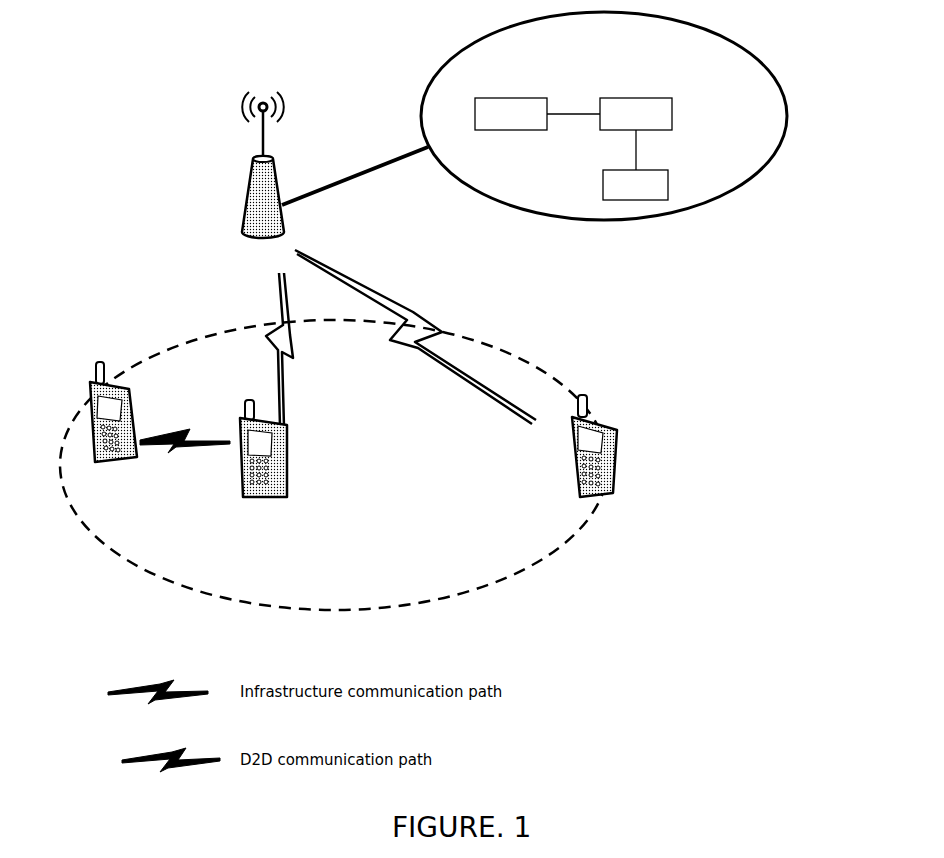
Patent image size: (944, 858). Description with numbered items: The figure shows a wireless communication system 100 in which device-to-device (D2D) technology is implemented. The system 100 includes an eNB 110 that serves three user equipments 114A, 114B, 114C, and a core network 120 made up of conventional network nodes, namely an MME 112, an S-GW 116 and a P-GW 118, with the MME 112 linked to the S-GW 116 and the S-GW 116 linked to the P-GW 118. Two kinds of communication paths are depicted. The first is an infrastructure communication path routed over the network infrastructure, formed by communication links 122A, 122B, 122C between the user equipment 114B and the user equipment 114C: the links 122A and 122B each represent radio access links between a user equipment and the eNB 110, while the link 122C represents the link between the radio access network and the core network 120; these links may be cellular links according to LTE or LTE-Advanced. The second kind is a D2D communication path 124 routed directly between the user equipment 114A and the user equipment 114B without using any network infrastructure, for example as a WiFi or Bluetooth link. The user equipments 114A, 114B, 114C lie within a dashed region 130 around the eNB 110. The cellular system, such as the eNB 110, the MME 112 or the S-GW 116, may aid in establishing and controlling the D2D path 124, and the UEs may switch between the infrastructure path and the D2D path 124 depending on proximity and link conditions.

The wireless communication system 100 is at (118, 89).
The eNB 110 is at (281, 162).
The MME 112 is at (515, 97).
The user equipment 114A is at (134, 402).
The user equipment 114B is at (288, 469).
The user equipment 114C is at (617, 487).
The S-GW 116 is at (650, 97).
The P-GW 118 is at (668, 183).
The core network 120 is at (785, 98).
The infrastructure communication link 122A is at (284, 366).
The infrastructure communication link 122B is at (410, 312).
The infrastructure communication link 122C is at (328, 186).
The D2D communication path 124 is at (167, 450).
The coverage area 130 is at (440, 596).